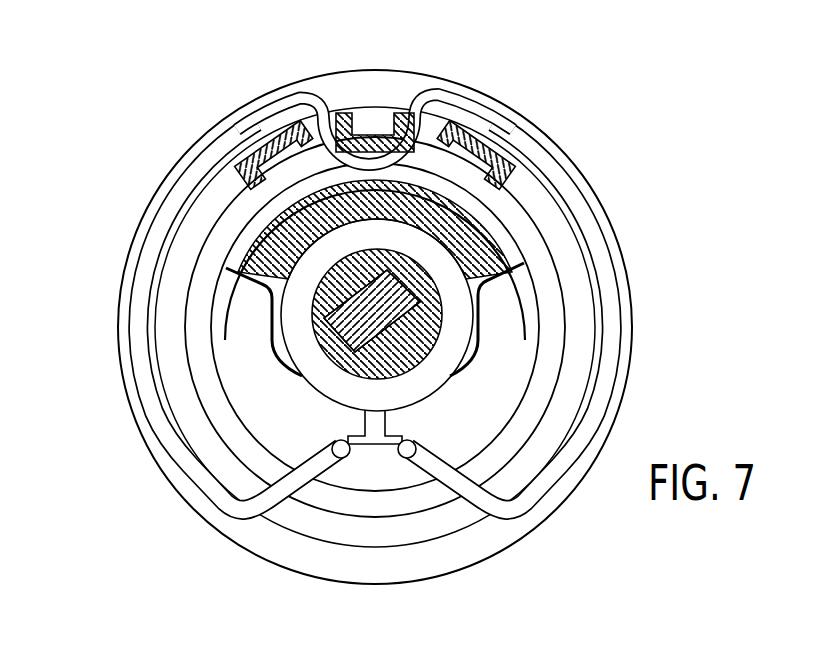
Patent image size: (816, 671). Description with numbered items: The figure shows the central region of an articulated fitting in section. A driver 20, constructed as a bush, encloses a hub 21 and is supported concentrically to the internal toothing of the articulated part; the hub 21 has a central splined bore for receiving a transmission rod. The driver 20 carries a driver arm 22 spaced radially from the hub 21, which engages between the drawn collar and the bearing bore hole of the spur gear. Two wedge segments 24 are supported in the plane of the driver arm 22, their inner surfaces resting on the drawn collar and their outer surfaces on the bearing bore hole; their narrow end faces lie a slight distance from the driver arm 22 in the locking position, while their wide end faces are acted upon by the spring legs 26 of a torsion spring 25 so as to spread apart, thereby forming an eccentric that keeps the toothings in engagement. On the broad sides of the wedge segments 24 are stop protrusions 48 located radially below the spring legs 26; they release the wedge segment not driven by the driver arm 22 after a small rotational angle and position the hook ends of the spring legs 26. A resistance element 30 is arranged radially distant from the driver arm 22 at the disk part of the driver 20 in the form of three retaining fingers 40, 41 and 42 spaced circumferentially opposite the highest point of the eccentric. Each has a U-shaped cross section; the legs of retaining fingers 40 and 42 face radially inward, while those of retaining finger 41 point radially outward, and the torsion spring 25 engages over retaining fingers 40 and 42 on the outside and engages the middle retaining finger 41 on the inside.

The driver 20 is at (188, 243).
The hub 21 is at (322, 318).
The driver arm 22 is at (470, 243).
The wedge segments 24 is at (292, 418).
The torsion spring 25 is at (162, 425).
The spring legs 26 is at (318, 472).
The resistance element 30 is at (382, 128).
The retaining finger 40 is at (487, 140).
The retaining finger 41 is at (372, 150).
The retaining finger 42 is at (255, 140).
The stop protrusions 48 is at (345, 436).